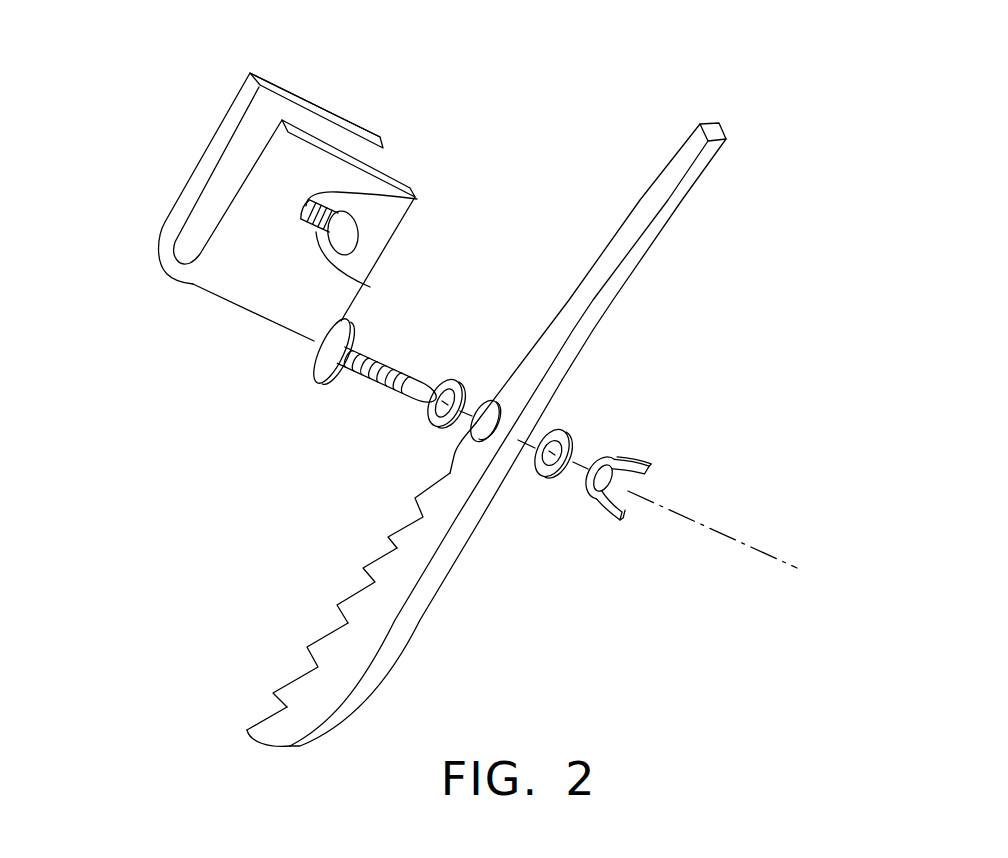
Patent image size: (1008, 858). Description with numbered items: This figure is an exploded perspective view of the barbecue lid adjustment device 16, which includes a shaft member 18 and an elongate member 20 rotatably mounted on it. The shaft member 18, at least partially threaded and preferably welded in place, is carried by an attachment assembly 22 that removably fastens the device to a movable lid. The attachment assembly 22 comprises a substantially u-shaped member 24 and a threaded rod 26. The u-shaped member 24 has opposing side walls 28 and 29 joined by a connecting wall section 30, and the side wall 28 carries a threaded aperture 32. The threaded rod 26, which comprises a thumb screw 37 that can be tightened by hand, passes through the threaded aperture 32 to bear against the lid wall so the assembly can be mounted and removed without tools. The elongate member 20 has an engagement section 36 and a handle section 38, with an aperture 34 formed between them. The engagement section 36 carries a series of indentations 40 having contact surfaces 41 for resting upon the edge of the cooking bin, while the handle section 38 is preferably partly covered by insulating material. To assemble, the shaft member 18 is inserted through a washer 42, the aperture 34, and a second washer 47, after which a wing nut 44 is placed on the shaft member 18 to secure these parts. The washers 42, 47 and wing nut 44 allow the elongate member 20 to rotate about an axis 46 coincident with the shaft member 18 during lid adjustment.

The barbecue lid adjustment device 16 is at (484, 409).
The shaft member 18 is at (380, 390).
The elongate member 20 is at (487, 434).
The attachment assembly 22 is at (262, 224).
The substantially u-shaped member 24 is at (262, 282).
The threaded rod 26 is at (370, 287).
The opposing side wall 28 is at (393, 177).
The opposing side wall 29 is at (363, 132).
The connecting wall section 30 is at (172, 273).
The threaded aperture 32 is at (419, 199).
The aperture 34 is at (478, 443).
The engagement section 36 is at (319, 601).
The thumb screw 37 is at (345, 233).
The handle section 38 is at (686, 243).
The indentations 40 is at (387, 548).
The contact surfaces 41 is at (318, 657).
The washer 42 is at (456, 385).
The wing nut 44 is at (652, 462).
The axis 46 is at (745, 547).
The washer 47 is at (572, 437).